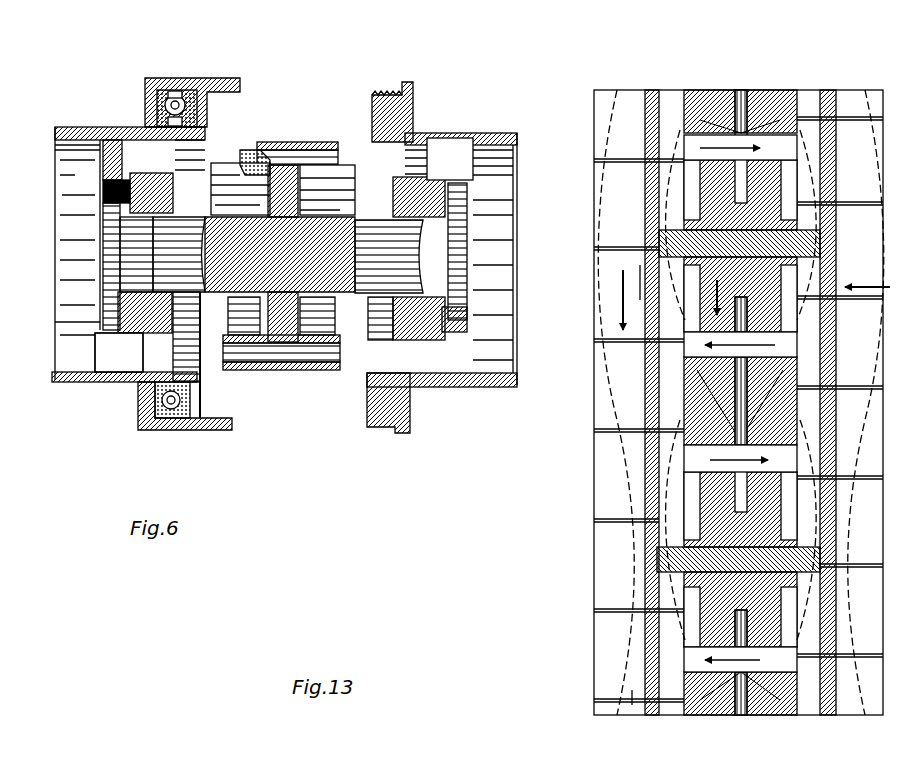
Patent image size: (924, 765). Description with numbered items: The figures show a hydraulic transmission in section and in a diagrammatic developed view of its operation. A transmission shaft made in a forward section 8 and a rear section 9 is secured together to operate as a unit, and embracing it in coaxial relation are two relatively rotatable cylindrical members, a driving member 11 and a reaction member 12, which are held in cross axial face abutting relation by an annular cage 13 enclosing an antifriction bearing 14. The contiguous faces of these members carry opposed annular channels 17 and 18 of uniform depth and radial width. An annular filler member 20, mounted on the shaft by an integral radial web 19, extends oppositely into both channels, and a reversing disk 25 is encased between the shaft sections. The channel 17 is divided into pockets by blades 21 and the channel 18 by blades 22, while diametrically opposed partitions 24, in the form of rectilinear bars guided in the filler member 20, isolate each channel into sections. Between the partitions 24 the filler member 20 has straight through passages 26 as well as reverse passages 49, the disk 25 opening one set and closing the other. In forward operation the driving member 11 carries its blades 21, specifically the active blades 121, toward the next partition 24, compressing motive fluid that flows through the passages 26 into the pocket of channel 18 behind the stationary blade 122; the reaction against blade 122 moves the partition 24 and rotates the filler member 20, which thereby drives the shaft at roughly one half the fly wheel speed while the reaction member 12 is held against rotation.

In FIG. 6, the forward section 8 is at (165, 250).
In FIG. 6, the rear section 9 is at (420, 252).
In FIG. 6, the driving member 11 is at (88, 127).
In FIG. 13, the driving member 11 is at (652, 90).
In FIG. 6, the reaction member 12 is at (415, 112).
In FIG. 13, the reaction member 12 is at (860, 92).
In FIG. 6, the annular cage 13 is at (222, 78).
In FIG. 6, the antifriction bearing 14 is at (176, 95).
In FIG. 6, the annular channel 17 is at (190, 350).
In FIG. 13, the annular channel 17 is at (665, 445).
In FIG. 6, the annular channel 18 is at (378, 372).
In FIG. 13, the annular channel 18 is at (828, 92).
In FIG. 6, the radial web 19 is at (368, 312).
In FIG. 6, the filler member 20 is at (298, 142).
In FIG. 13, the filler member 20 is at (780, 90).
In FIG. 6, the blades 21 is at (119, 352).
In FIG. 13, the blades 21 is at (603, 258).
In FIG. 6, the blades 22 is at (450, 159).
In FIG. 13, the blades 22 is at (848, 372).
In FIG. 6, the partitions 24 is at (226, 165).
In FIG. 13, the partitions 24 is at (828, 242).
In FIG. 13, the reversing disk 25 is at (742, 92).
In FIG. 6, the straight through passages 26 is at (325, 165).
In FIG. 13, the straight through passages 26 is at (740, 403).
In FIG. 13, the reverse passages 49 is at (760, 375).
In FIG. 13, the blades 121 is at (622, 418).
In FIG. 13, the blade 122 is at (850, 372).